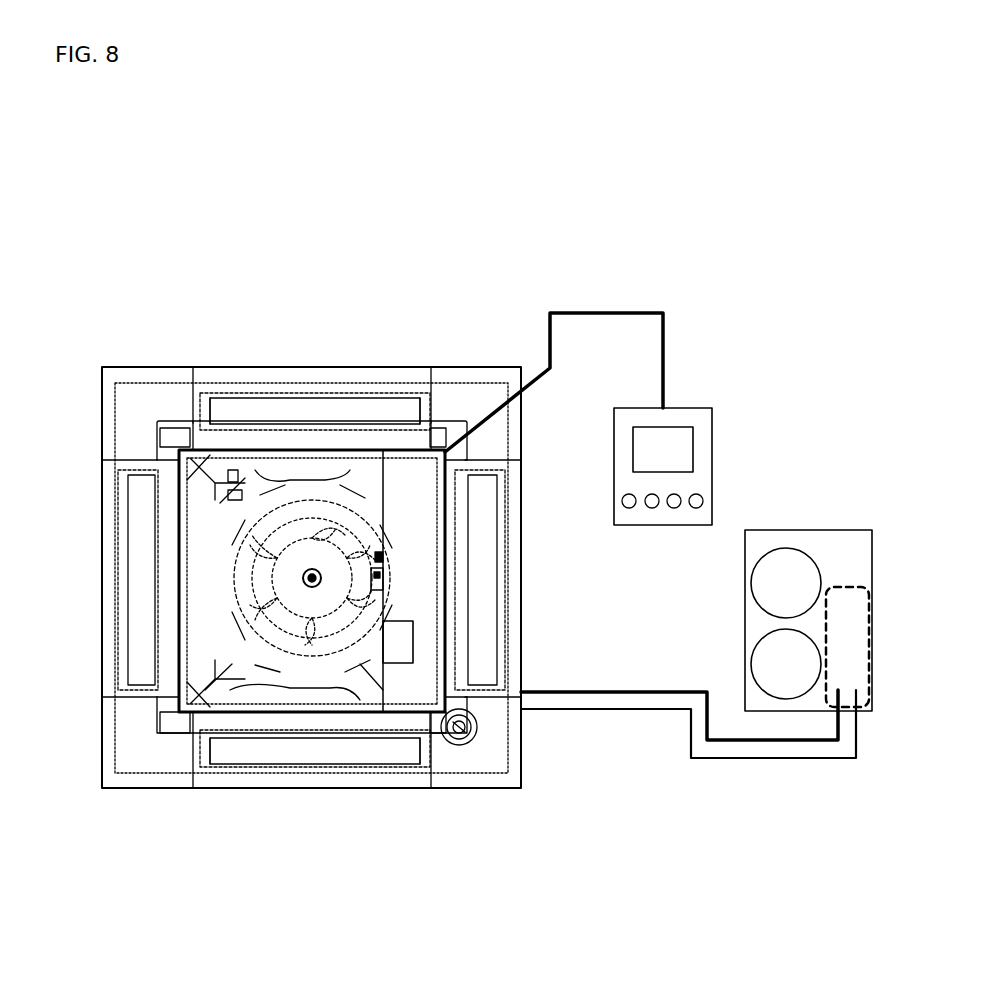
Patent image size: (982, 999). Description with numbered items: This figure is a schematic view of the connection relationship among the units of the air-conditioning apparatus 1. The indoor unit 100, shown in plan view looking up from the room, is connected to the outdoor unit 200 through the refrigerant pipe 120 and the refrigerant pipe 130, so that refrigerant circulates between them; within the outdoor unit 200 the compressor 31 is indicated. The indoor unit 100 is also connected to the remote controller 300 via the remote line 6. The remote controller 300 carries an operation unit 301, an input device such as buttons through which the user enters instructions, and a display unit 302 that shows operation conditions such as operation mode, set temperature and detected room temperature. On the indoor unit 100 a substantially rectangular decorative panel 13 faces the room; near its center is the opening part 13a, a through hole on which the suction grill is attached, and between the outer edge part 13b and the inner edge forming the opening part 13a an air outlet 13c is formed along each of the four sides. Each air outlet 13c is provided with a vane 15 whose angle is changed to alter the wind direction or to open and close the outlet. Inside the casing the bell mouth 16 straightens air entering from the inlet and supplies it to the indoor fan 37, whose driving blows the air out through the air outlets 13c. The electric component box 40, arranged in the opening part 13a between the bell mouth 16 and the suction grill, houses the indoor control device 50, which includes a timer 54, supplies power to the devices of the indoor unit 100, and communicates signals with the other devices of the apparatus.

The air-conditioning apparatus 1 is at (178, 246).
The indoor unit 100 is at (469, 334).
The decorative panel 13 is at (152, 368).
The opening part 13a is at (445, 688).
The outer edge part 13b is at (230, 368).
The air outlet 13c is at (380, 392).
The vane 15 is at (300, 395).
The bell mouth 16 is at (233, 535).
The indoor fan 37 is at (302, 579).
The electric component box 40 is at (420, 535).
The indoor control device 50 is at (384, 578).
The timer 54 is at (384, 558).
The remote line 6 is at (588, 313).
The remote controller 300 is at (702, 469).
The operation unit 301 is at (675, 509).
The display unit 302 is at (694, 452).
The outdoor unit 200 is at (828, 593).
The compressor 31 is at (858, 588).
The refrigerant pipe 120 is at (634, 692).
The refrigerant pipe 130 is at (730, 759).